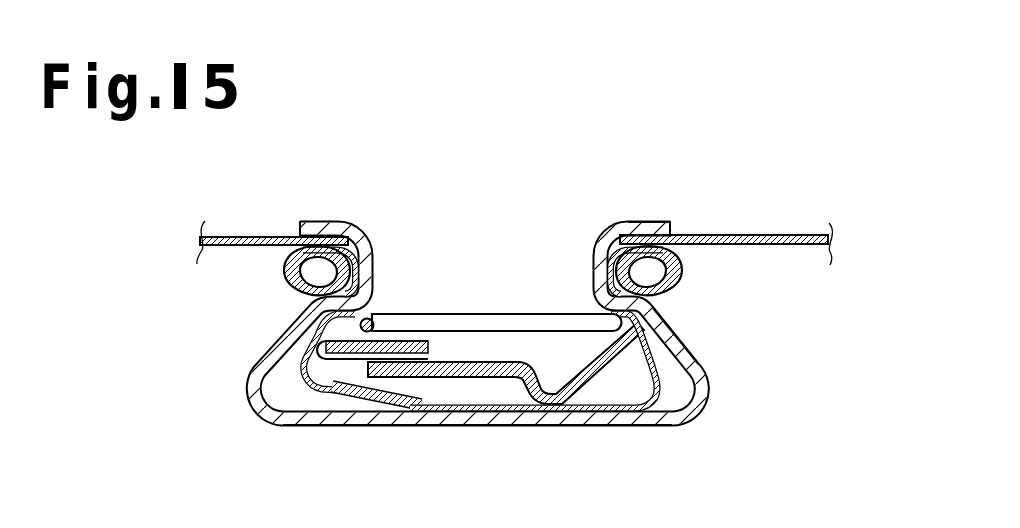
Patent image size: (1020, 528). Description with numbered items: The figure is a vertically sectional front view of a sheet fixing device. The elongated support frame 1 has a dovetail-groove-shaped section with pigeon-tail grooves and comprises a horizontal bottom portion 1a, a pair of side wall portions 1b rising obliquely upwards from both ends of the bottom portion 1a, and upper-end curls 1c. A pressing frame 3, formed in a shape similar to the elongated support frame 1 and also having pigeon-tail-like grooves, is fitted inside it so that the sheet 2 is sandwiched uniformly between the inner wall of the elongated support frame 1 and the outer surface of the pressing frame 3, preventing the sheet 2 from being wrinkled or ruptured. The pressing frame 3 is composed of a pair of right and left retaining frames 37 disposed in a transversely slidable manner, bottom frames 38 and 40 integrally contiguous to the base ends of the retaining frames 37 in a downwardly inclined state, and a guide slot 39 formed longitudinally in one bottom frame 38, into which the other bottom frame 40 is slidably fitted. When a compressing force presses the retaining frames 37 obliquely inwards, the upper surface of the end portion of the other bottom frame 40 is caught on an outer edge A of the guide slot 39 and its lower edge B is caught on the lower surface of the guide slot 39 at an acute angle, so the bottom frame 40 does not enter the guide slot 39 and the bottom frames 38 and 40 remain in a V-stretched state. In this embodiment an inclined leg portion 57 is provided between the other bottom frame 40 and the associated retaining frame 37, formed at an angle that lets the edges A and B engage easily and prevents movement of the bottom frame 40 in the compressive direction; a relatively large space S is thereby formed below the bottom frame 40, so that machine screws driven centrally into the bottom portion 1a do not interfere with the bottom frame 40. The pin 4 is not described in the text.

The elongated support frame 1 is at (567, 430).
The horizontal bottom portion 1a is at (418, 423).
The side wall portions 1b is at (684, 346).
The upper-end curls 1c is at (663, 238).
The sheet 2 is at (749, 235).
The pressing frame 3 is at (463, 243).
The pin 4 is at (412, 316).
The outer edge of the guide slot A is at (440, 360).
The retaining frames 37 is at (272, 325).
The bottom frame 38 is at (368, 404).
The guide slot 39 is at (308, 398).
The other bottom frame 40 is at (473, 380).
The inclined leg portion 57 is at (620, 393).
The lower edge of the end portion of the bottom frame B is at (348, 397).
The space S is at (450, 390).